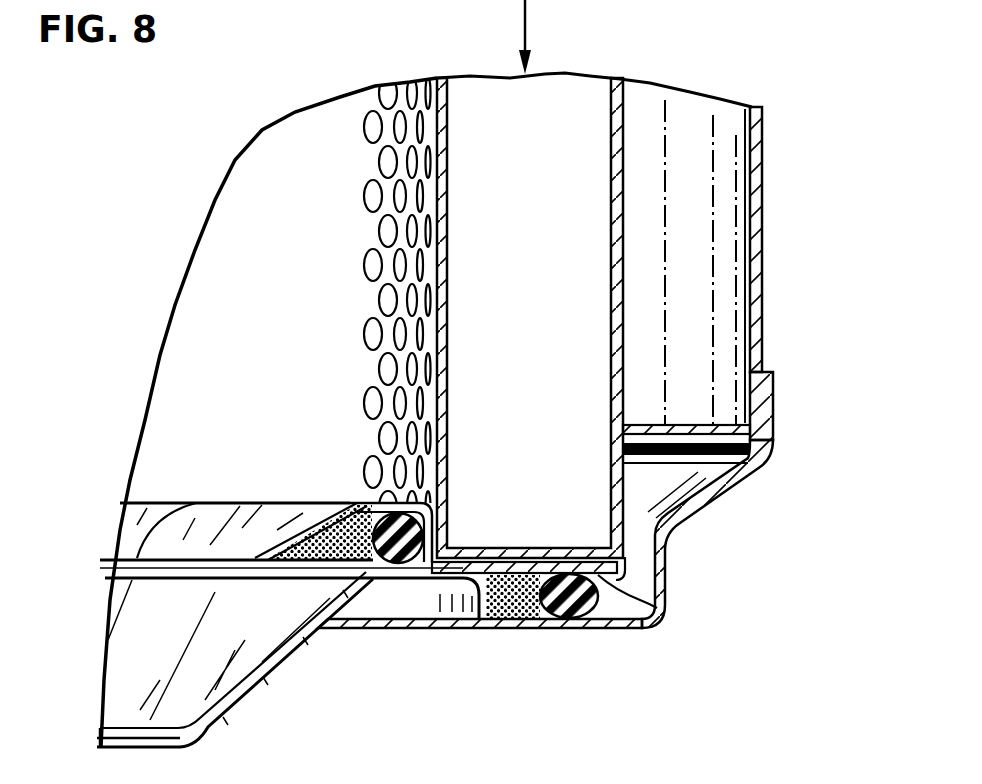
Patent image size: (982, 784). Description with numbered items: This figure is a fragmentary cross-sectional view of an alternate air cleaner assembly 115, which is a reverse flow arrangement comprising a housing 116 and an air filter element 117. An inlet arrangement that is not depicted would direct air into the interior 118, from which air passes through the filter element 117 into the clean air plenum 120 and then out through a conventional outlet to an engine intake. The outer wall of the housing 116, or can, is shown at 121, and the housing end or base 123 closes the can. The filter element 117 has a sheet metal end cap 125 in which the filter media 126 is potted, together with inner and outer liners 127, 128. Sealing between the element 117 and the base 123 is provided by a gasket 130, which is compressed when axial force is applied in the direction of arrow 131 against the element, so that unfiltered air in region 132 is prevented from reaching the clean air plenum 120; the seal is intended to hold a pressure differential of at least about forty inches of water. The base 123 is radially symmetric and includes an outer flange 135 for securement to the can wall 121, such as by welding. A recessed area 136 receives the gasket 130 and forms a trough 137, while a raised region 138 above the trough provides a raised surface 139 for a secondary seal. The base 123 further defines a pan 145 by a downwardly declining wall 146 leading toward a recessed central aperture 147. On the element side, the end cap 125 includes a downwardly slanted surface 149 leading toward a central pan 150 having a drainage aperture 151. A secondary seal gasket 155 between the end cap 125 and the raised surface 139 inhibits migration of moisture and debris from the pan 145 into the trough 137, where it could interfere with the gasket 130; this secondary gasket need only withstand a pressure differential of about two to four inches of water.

The air cleaner assembly 115 is at (128, 373).
The housing 116 is at (763, 291).
The air filter element 117 is at (565, 92).
The interior 118 is at (440, 104).
The clean air plenum 120 is at (745, 250).
The outer wall of the housing 121 is at (766, 342).
The housing end or base 123 is at (715, 503).
The end cap 125 is at (648, 592).
The filter media 126 is at (573, 310).
The inner liner 127 is at (440, 297).
The outer liner 128 is at (632, 84).
The gasket 130 is at (619, 630).
The arrow 131 is at (525, 22).
The region 132 is at (283, 642).
The outer flange 135 is at (773, 437).
The recessed area 136 is at (520, 612).
The trough 137 is at (653, 610).
The raised region 138 is at (440, 538).
The raised surface 139 is at (348, 501).
The pan 145 is at (250, 702).
The declining wall 146 is at (238, 692).
The recessed central aperture 147 is at (123, 730).
The downwardly slanted surface 149 is at (283, 522).
The central pan 150 is at (198, 512).
The drainage aperture 151 is at (142, 558).
The secondary seal gasket 155 is at (376, 560).